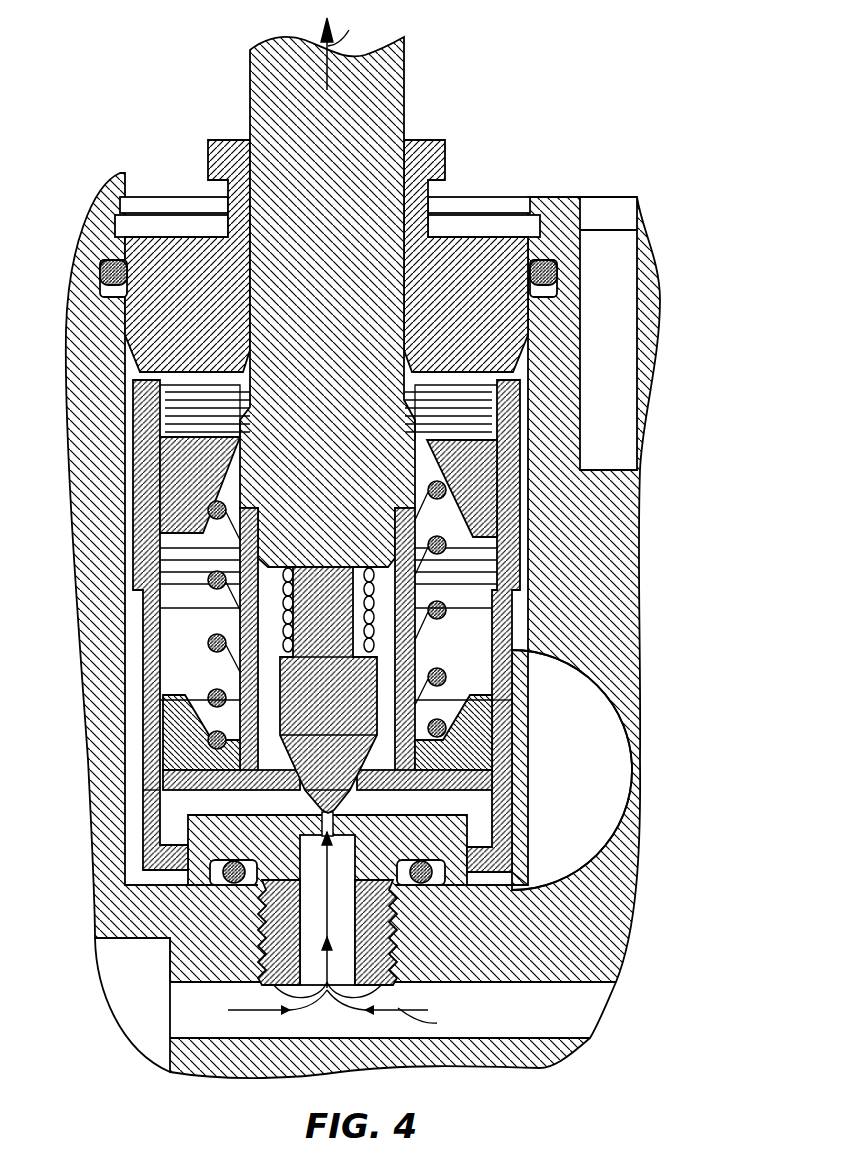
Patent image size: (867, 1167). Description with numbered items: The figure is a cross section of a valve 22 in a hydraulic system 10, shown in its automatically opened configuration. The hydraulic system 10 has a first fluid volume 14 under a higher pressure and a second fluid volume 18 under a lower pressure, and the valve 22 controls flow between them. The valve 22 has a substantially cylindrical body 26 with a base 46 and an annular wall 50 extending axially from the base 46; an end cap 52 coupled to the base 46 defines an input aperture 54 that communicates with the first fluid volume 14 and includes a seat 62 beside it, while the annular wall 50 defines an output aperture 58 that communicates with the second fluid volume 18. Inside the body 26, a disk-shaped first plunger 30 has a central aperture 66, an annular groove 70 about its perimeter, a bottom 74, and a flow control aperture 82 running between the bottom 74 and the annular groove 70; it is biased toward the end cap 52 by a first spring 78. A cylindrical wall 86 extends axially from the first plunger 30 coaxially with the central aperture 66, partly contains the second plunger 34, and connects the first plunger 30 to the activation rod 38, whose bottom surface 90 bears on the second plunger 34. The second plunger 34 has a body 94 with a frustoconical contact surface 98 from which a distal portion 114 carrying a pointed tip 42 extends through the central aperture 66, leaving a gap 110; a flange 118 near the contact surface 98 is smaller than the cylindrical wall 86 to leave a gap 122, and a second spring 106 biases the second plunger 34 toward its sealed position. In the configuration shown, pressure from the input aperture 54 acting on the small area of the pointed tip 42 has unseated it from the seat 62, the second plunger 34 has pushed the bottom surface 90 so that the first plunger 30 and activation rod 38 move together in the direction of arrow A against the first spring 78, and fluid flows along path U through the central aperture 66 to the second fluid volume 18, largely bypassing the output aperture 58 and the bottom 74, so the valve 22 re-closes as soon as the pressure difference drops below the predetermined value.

The hydraulic system 10 is at (628, 114).
The first fluid volume 14 is at (560, 1000).
The second fluid volume 18 is at (540, 612).
The valve 22 is at (505, 518).
The body 26 is at (497, 548).
The first plunger 30 is at (495, 722).
The second plunger 34 is at (315, 597).
The activation rod 38 is at (362, 145).
The pointed tip 42 is at (255, 893).
The base 46 is at (215, 868).
The annular wall 50 is at (240, 688).
The end cap 52 is at (250, 893).
The input aperture 54 is at (398, 962).
The output aperture 58 is at (150, 778).
The seat 62 is at (395, 862).
The central aperture 66 is at (490, 795).
The annular groove 70 is at (165, 800).
The bottom 74 is at (515, 885).
The first spring 78 is at (412, 592).
The flow control aperture 82 is at (512, 793).
The cylindrical wall 86 is at (480, 668).
The bottom surface 90 is at (342, 583).
The body 94 is at (340, 647).
The contact surface 98 is at (346, 770).
The second spring 106 is at (470, 650).
The gap 110 is at (185, 835).
The distal portion 114 is at (430, 880).
The flange 118 is at (500, 690).
The gap 122 is at (328, 703).